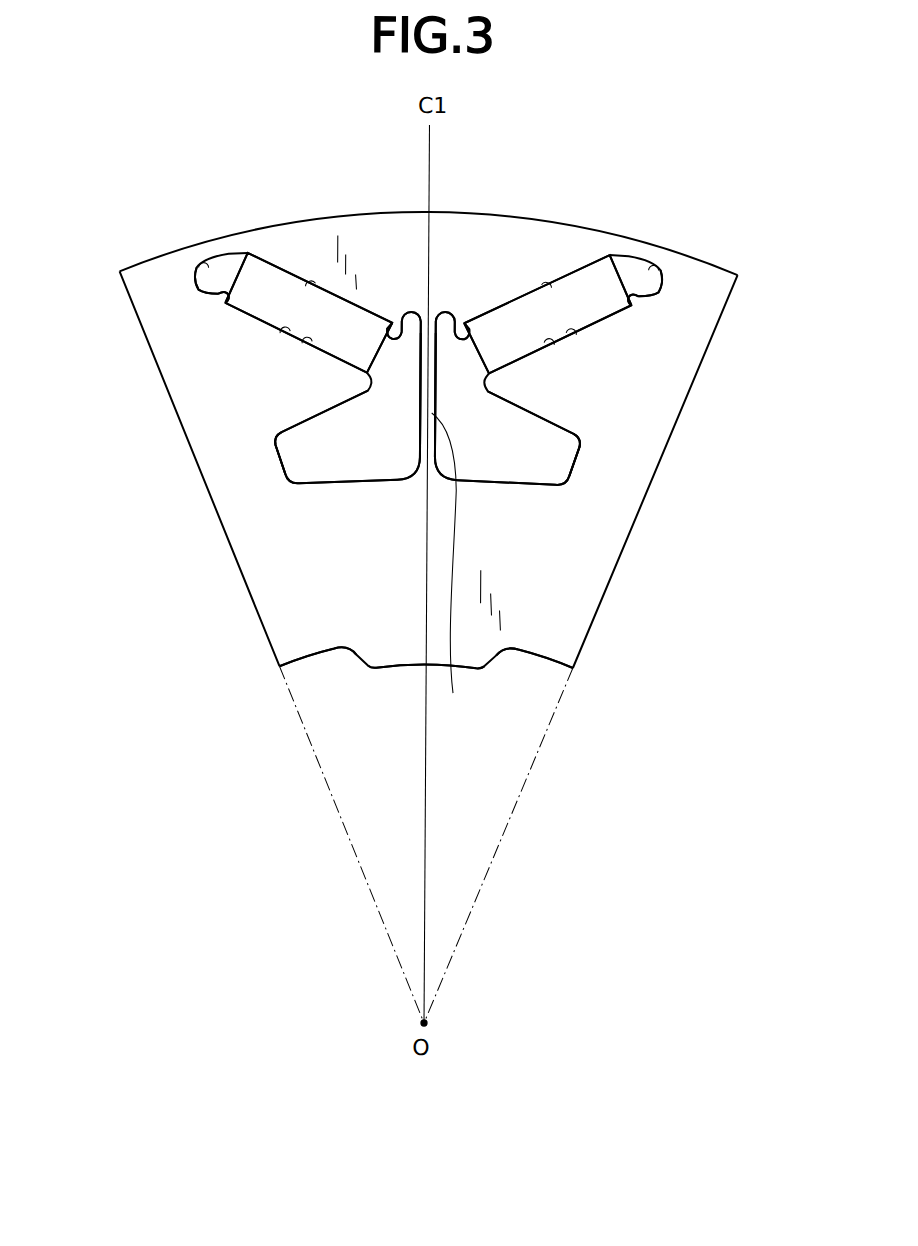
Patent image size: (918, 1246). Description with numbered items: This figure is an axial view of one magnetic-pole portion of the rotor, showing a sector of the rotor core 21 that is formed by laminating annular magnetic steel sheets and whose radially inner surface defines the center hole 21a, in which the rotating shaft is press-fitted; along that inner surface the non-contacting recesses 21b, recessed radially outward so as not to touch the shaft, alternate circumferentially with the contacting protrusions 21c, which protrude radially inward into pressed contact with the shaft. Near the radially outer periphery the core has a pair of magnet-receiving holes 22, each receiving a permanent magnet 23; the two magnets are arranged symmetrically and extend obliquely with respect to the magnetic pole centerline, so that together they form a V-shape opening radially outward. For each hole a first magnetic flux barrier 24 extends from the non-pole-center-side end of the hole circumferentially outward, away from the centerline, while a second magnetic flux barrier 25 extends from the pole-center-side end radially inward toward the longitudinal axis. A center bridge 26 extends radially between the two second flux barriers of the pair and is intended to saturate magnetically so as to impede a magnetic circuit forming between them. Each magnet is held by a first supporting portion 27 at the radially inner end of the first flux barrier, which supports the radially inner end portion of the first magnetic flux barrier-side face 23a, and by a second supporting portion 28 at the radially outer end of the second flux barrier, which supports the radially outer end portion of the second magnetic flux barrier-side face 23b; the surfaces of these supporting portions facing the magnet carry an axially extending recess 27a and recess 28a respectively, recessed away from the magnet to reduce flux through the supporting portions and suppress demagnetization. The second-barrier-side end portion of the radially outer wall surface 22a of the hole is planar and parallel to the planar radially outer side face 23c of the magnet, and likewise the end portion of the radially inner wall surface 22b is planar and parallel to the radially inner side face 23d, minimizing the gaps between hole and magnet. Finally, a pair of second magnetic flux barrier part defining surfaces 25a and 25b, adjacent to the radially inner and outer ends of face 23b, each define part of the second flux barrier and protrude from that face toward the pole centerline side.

The rotor core 21 is at (426, 617).
The center hole 21a is at (361, 721).
The non-contacting recess 21b is at (396, 698).
The contacting protrusion 21c is at (352, 726).
The magnet-receiving hole 22 is at (423, 393).
The radially outer wall surface 22a is at (432, 232).
The radially inner wall surface 22b is at (430, 418).
The permanent magnet 23 is at (426, 341).
The first magnetic flux barrier-side face 23a is at (430, 250).
The second magnetic flux barrier-side face 23b is at (430, 426).
The radially outer side face 23c is at (432, 250).
The radially inner side face 23d is at (432, 386).
The first magnetic flux barrier 24 is at (430, 239).
The second magnetic flux barrier 25 is at (427, 447).
The second magnetic flux barrier part defining surface 25a is at (427, 448).
The second magnetic flux barrier part defining surface 25b is at (444, 423).
The center bridge 26 is at (451, 570).
The first supporting portion 27 is at (432, 312).
The recess 27a is at (430, 327).
The second supporting portion 28 is at (431, 254).
The recess 28a is at (434, 250).